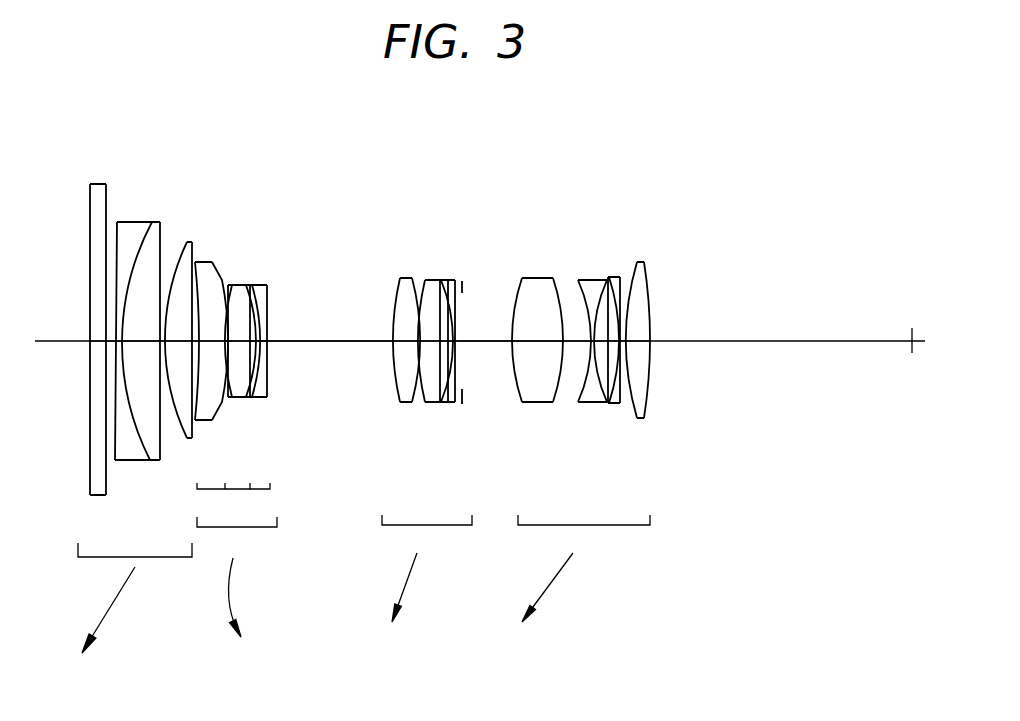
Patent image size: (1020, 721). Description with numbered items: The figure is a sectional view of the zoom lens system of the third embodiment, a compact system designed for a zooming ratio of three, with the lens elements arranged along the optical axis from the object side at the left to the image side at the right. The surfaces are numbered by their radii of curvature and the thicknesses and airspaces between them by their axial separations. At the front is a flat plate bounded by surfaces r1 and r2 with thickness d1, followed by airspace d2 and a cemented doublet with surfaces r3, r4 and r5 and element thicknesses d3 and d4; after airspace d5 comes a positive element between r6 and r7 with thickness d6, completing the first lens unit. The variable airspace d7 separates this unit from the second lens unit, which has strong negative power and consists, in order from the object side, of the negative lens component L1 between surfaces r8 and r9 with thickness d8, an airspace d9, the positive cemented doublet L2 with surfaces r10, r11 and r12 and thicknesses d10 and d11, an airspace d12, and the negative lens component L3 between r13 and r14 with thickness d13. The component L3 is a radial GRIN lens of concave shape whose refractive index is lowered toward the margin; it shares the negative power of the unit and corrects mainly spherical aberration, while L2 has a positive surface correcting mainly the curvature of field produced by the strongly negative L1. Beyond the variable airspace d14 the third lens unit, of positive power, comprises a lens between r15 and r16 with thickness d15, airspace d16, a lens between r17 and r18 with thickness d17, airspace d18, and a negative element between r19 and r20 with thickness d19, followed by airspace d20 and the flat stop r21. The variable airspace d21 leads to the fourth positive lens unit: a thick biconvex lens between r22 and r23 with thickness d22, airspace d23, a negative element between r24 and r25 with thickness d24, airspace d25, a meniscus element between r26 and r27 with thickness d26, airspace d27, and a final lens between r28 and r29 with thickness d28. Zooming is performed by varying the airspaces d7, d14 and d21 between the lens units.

The radius of curvature of first lens surface r1 is at (90, 207).
The radius of curvature of second lens surface r2 is at (98, 184).
The radius of curvature of third lens surface r3 is at (117, 226).
The radius of curvature of fourth lens surface r4 is at (148, 222).
The radius of curvature of fifth lens surface r5 is at (159, 222).
The radius of curvature of sixth lens surface r6 is at (185, 243).
The radius of curvature of seventh lens surface r7 is at (191, 241).
The radius of curvature of eighth lens surface r8 is at (197, 262).
The radius of curvature of ninth lens surface r9 is at (212, 262).
The radius of curvature of tenth lens surface r10 is at (229, 284).
The radius of curvature of eleventh lens surface r11 is at (241, 284).
The radius of curvature of twelfth lens surface r12 is at (250, 284).
The radius of curvature of thirteenth lens surface r13 is at (258, 284).
The radius of curvature of fourteenth lens surface r14 is at (268, 290).
The radius of curvature of fifteenth lens surface r15 is at (397, 290).
The radius of curvature of sixteenth lens surface r16 is at (417, 303).
The radius of curvature of seventeenth lens surface r17 is at (424, 280).
The radius of curvature of eighteenth lens surface r18 is at (439, 280).
The radius of curvature of nineteenth lens surface r19 is at (448, 280).
The radius of curvature of twentieth lens surface r20 is at (457, 280).
The stop r21 is at (463, 286).
The radius of curvature of twenty-second lens surface r22 is at (521, 280).
The radius of curvature of twenty-third lens surface r23 is at (549, 278).
The radius of curvature of twenty-fourth lens surface r24 is at (578, 281).
The radius of curvature of twenty-fifth lens surface r25 is at (592, 280).
The radius of curvature of twenty-sixth lens surface r26 is at (607, 277).
The radius of curvature of twenty-seventh lens surface r27 is at (617, 277).
The radius of curvature of twenty-eighth lens surface r28 is at (637, 263).
The radius of curvature of twenty-ninth lens surface r29 is at (645, 277).
The thickness of first lens element d1 is at (98, 343).
The airspace behind first lens element d2 is at (106, 338).
The thickness of second lens element d3 is at (117, 345).
The thickness of third lens element d4 is at (124, 345).
The airspace behind cemented doublet d5 is at (163, 343).
The thickness of fourth lens element d6 is at (178, 360).
The variable airspace D1 d7 is at (193, 332).
The thickness of fifth lens element d8 is at (209, 355).
The airspace between L1 and L2 d9 is at (228, 355).
The thickness of sixth lens element d10 is at (240, 358).
The thickness of seventh lens element d11 is at (252, 360).
The airspace between L2 and L3 d12 is at (268, 336).
The thickness of eighth lens element d13 is at (268, 345).
The variable airspace D2 d14 is at (327, 350).
The thickness of ninth lens element d15 is at (394, 346).
The airspace in third lens unit d16 is at (418, 338).
The thickness of tenth lens element d17 is at (428, 352).
The airspace before negative element of third unit d18 is at (441, 338).
The thickness of eleventh lens element d19 is at (449, 360).
The airspace before stop d20 is at (458, 343).
The variable airspace D3 d21 is at (503, 348).
The thickness of twelfth lens element d22 is at (532, 345).
The airspace in fourth lens unit d23 is at (570, 346).
The thickness of thirteenth lens element d24 is at (594, 350).
The airspace behind negative element of fourth unit d25 is at (606, 337).
The thickness of fourteenth lens element d26 is at (614, 350).
The airspace before final lens element d27 is at (624, 362).
The thickness of fifteenth lens element d28 is at (640, 342).
The negative lens component L1 is at (211, 499).
The cemented doublet L2 is at (237, 499).
The negative lens component (radial GRIN lens component) L3 is at (260, 499).